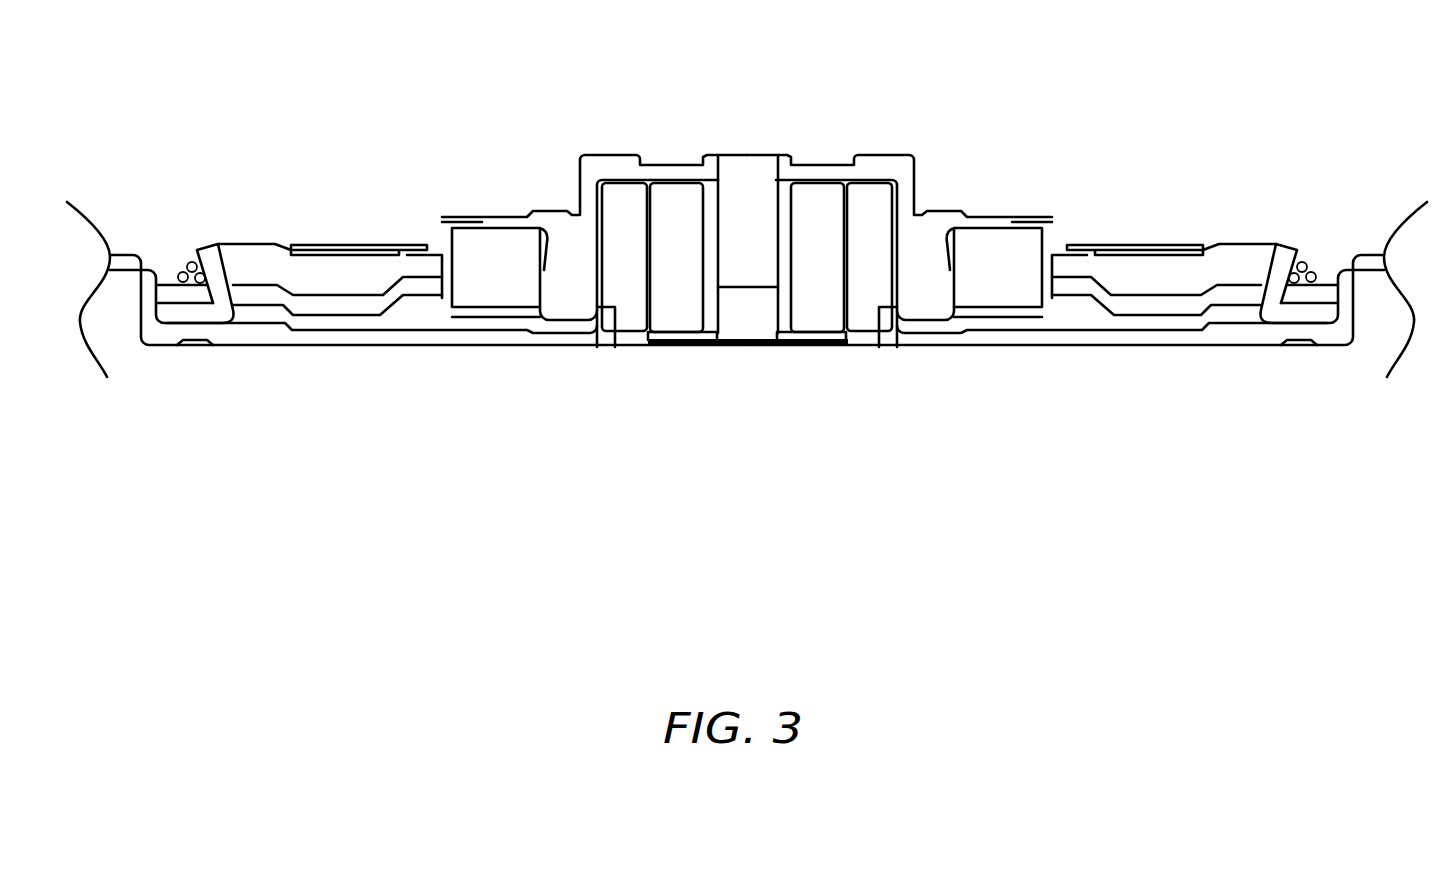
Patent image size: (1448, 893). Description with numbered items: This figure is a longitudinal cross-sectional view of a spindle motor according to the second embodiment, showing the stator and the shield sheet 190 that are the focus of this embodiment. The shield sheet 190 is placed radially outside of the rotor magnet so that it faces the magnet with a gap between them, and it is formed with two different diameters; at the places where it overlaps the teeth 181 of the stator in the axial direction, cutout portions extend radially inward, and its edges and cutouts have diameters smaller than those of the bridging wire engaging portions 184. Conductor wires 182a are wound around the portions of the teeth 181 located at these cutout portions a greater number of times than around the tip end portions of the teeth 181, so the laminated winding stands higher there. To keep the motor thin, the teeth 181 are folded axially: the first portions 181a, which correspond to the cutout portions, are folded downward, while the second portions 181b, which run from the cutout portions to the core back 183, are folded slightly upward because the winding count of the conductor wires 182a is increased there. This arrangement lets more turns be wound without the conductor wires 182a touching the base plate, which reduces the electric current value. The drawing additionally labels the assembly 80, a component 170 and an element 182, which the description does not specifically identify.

The lens driving unit 80 is at (1085, 310).
The magnet 170 is at (993, 278).
The teeth 181 is at (367, 338).
The first portions 181a is at (317, 315).
The second portions 181b is at (253, 313).
The bent tab 182 is at (1280, 228).
The conductor wires 182a is at (1237, 260).
The core back 183 is at (179, 283).
The bridging wire engaging portions 184 is at (210, 260).
The shield sheet 190 is at (1153, 245).